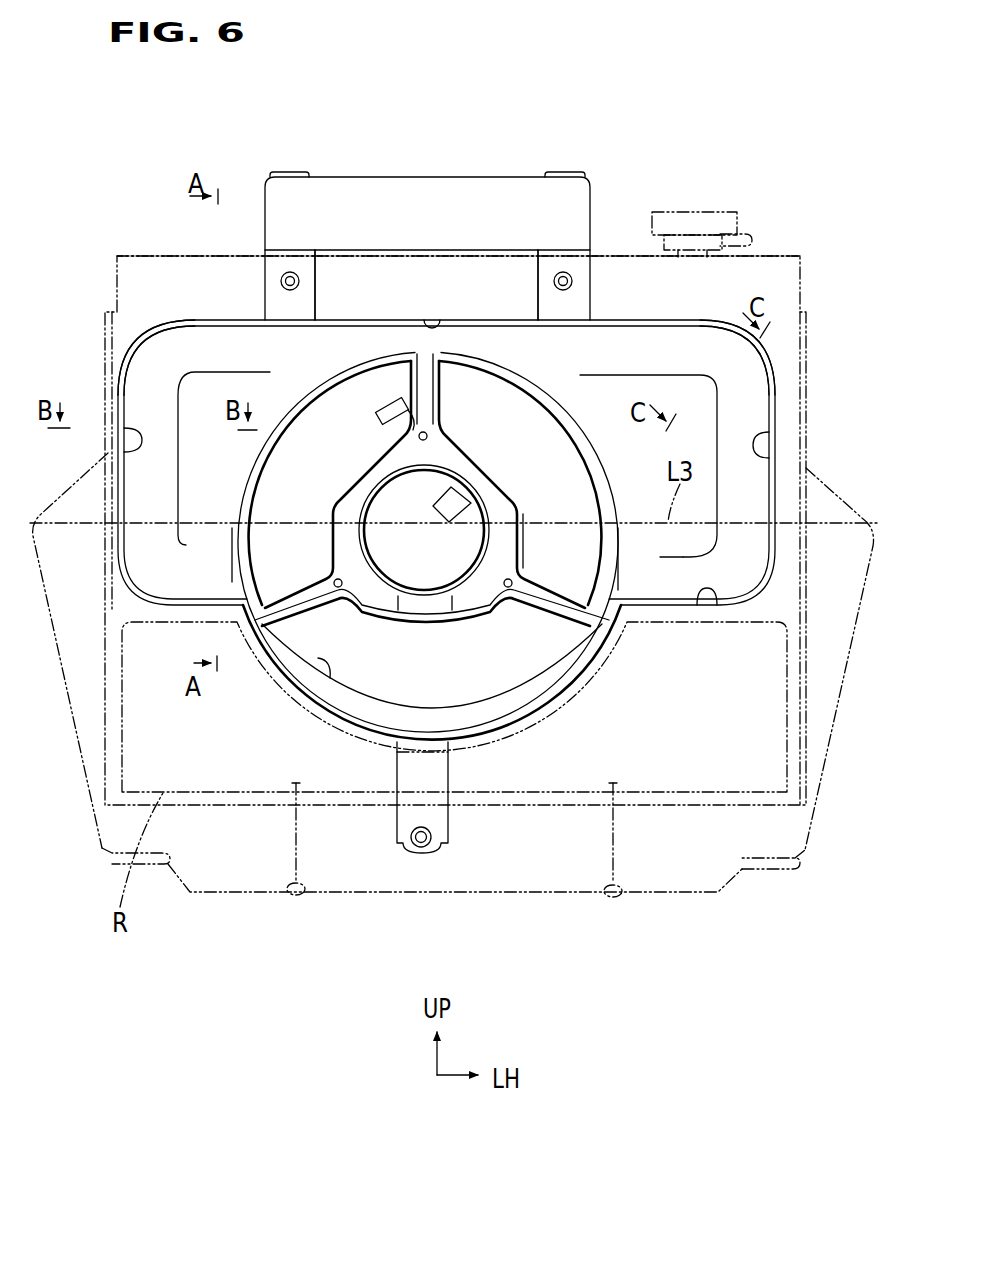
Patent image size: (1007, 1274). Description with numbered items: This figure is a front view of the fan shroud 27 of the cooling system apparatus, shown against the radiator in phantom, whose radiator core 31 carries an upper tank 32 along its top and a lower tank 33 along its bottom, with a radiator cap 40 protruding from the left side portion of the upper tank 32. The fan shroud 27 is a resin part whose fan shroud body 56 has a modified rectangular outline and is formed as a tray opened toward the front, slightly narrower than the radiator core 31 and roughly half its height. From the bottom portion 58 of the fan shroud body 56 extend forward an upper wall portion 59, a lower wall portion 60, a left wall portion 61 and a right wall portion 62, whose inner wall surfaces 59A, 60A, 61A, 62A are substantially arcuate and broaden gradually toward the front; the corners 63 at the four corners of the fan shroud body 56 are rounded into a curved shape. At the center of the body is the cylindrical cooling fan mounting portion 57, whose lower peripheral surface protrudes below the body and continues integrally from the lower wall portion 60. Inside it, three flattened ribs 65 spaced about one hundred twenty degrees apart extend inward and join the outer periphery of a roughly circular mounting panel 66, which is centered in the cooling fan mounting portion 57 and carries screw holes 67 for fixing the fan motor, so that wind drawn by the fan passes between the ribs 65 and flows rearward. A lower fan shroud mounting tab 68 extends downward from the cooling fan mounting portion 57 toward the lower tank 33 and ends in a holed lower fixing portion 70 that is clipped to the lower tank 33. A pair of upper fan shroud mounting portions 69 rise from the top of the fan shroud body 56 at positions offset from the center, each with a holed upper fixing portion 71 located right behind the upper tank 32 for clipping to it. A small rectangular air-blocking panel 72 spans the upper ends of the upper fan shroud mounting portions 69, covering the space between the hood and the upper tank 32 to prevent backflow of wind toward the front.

The fan shroud 27 is at (597, 108).
The radiator core 31 is at (810, 410).
The upper tank 32 is at (779, 258).
The lower tank 33 is at (690, 896).
The radiator cap 40 is at (713, 210).
The fan shroud body 56 is at (618, 365).
The cooling fan mounting portion 57 is at (327, 664).
The bottom portion 58 is at (668, 548).
The upper wall portion 59 is at (465, 336).
The inner wall surface 59A is at (433, 325).
The lower wall portion 60 is at (647, 613).
The inner wall surface 60A is at (712, 600).
The left wall portion 61 is at (778, 398).
The inner wall surface 61A is at (762, 456).
The right wall portion 62 is at (121, 396).
The inner wall surface 62A is at (130, 446).
The corners 63 is at (128, 362).
The ribs 65 is at (430, 397).
The mounting panel 66 is at (500, 502).
The screw holes 67 is at (419, 440).
The lower fan shroud mounting tab 68 is at (440, 782).
The upper fan shroud mounting portions 69 is at (275, 291).
The lower fixing portion 70 is at (432, 838).
The upper fixing portions 71 is at (300, 280).
The air-blocking panel 72 is at (372, 185).